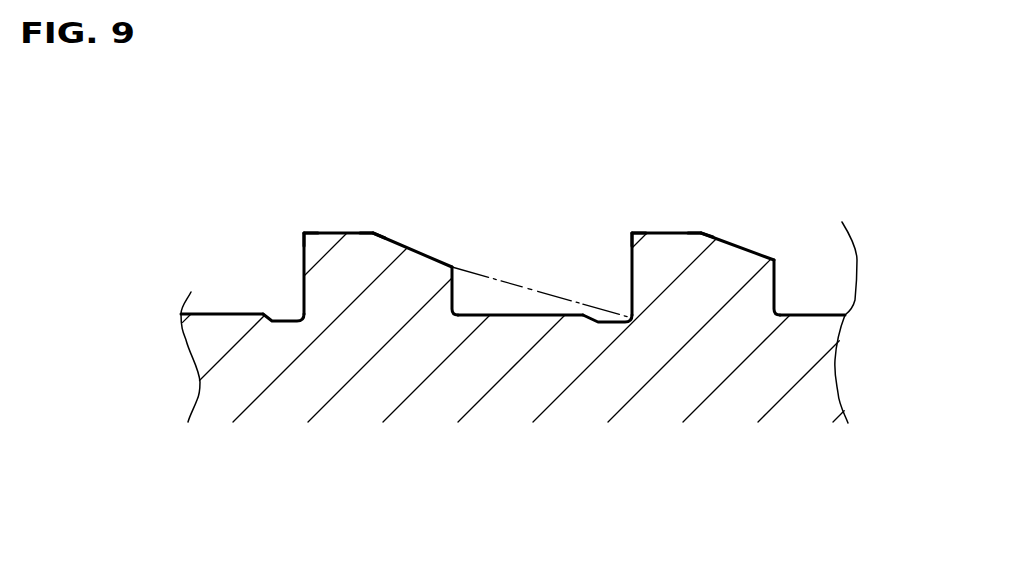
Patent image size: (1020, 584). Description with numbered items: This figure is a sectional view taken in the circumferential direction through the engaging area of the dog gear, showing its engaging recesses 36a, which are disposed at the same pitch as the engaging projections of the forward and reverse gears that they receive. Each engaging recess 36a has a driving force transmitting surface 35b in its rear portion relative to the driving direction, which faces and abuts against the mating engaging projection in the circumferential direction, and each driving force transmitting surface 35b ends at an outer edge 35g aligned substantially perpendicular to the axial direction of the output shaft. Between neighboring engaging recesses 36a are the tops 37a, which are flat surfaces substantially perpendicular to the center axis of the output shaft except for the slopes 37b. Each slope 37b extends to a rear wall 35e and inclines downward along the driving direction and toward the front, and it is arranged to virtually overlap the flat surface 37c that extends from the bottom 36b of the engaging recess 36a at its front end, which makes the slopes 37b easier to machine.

The engaging recess 36a is at (207, 312).
The bottom 36b is at (303, 315).
The driving force transmitting surface 35b is at (303, 260).
The outer edge 35g is at (304, 232).
The top 37a is at (347, 232).
The slope 37b is at (430, 258).
The flat surface 37c is at (374, 232).
The rear wall 35e is at (474, 266).